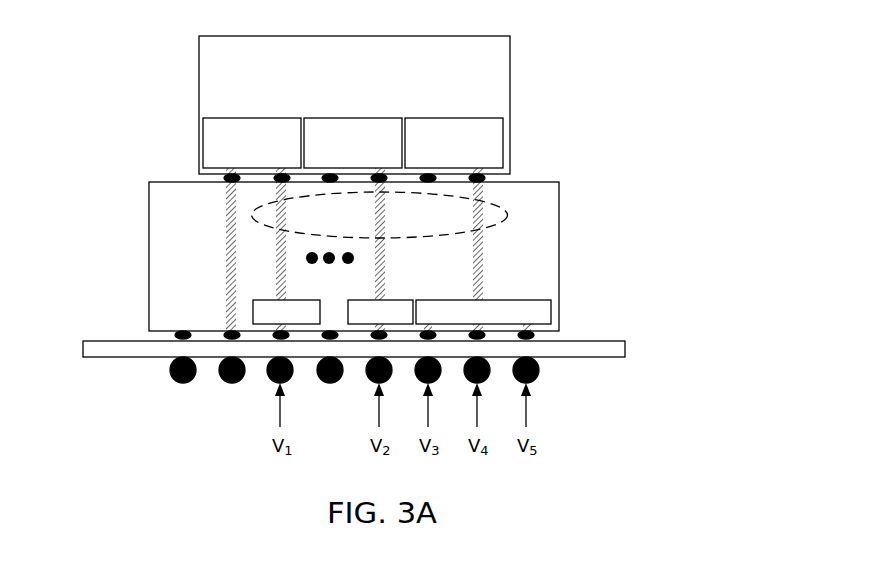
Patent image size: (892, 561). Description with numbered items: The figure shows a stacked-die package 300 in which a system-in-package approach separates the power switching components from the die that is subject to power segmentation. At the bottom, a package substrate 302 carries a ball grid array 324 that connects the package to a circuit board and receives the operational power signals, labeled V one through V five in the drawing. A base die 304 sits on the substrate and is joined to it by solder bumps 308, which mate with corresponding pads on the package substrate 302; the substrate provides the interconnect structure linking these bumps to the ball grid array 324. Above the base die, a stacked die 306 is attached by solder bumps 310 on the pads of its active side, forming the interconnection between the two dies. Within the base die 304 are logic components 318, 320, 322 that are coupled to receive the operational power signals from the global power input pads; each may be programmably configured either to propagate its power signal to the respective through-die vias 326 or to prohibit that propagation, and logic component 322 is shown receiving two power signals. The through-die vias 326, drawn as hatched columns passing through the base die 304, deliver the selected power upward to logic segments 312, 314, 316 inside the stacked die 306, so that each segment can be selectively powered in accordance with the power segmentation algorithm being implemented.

The stacked-die package 300 is at (668, 165).
The package substrate 302 is at (83, 343).
The base die 304 is at (149, 228).
The stacked die 306 is at (199, 152).
The solder bumps 308 is at (535, 335).
The solder bumps 310 is at (485, 180).
The logic segment 312 is at (208, 118).
The logic segment 314 is at (310, 118).
The logic segment 316 is at (408, 118).
The logic component 318 is at (292, 300).
The logic component 320 is at (393, 300).
The logic component 322 is at (486, 301).
The ball grid array 324 is at (540, 370).
The through-die vias 326 is at (505, 208).